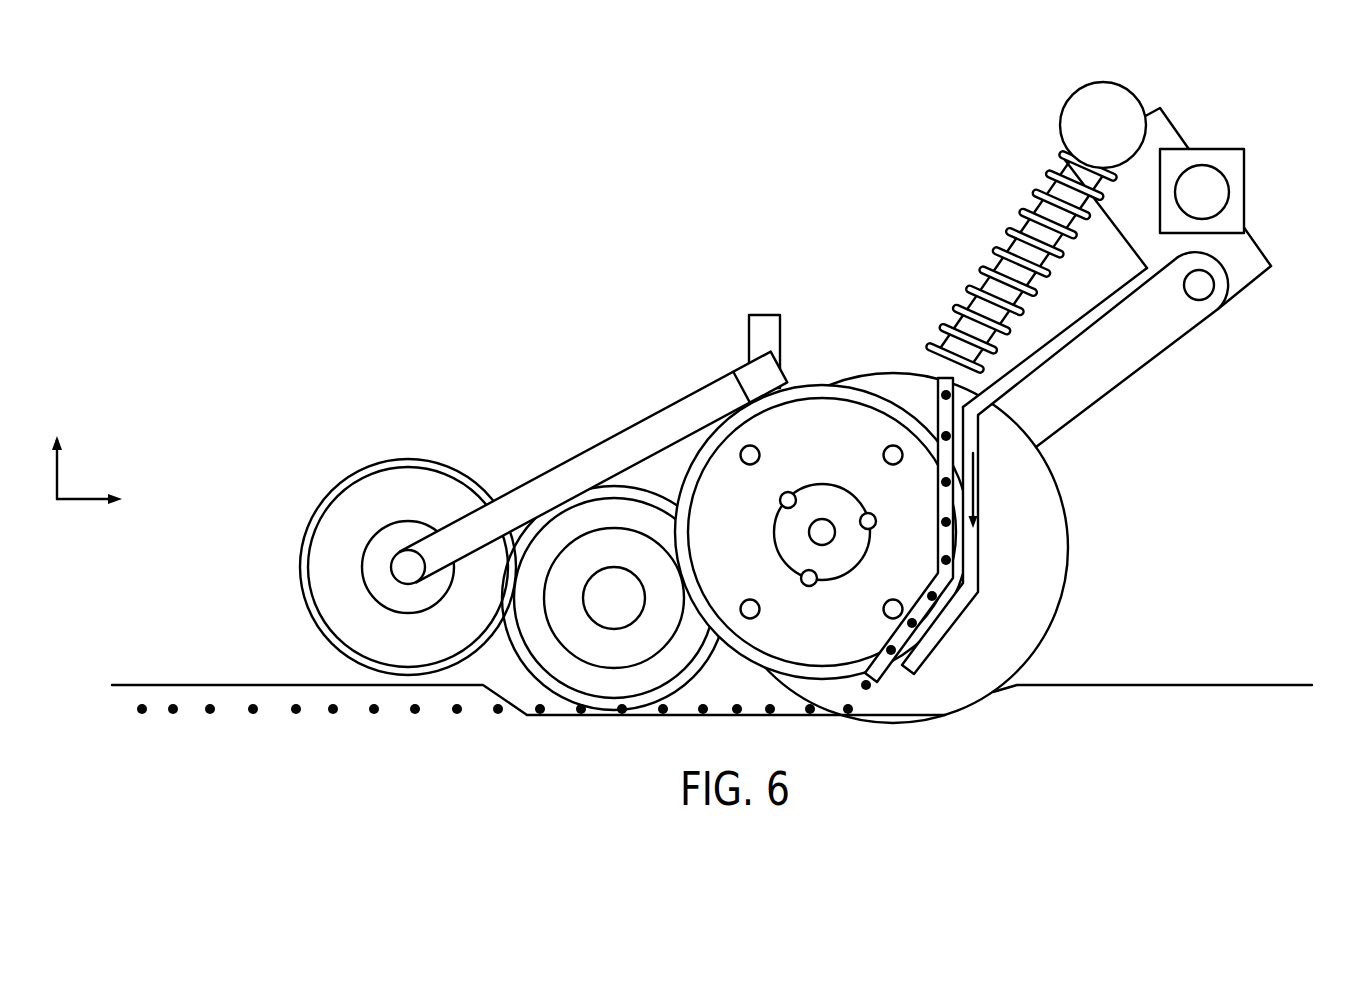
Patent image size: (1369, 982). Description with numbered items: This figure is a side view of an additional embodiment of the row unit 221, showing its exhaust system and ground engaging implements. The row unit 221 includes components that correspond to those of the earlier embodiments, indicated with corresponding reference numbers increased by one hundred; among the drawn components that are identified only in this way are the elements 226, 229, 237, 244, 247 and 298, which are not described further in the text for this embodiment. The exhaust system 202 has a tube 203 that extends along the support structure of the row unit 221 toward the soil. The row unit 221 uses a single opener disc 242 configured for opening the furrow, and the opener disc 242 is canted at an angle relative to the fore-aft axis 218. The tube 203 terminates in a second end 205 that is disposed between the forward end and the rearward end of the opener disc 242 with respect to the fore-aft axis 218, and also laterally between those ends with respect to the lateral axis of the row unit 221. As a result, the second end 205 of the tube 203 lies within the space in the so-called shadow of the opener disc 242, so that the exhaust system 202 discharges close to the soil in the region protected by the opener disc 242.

The exhaust system 202 is at (1075, 344).
The tube 203 is at (1120, 307).
The second end 205 is at (905, 670).
The fore-aft axis 218 is at (80, 500).
The row unit 221 is at (860, 298).
The vertical direction 226 is at (58, 474).
The pivot 229 is at (1203, 280).
The spring mount 237 is at (1112, 104).
The opener disc 242 is at (1032, 592).
The gauge wheel 244 is at (350, 502).
The opener disc 247 is at (712, 493).
The seed tube 298 is at (932, 426).